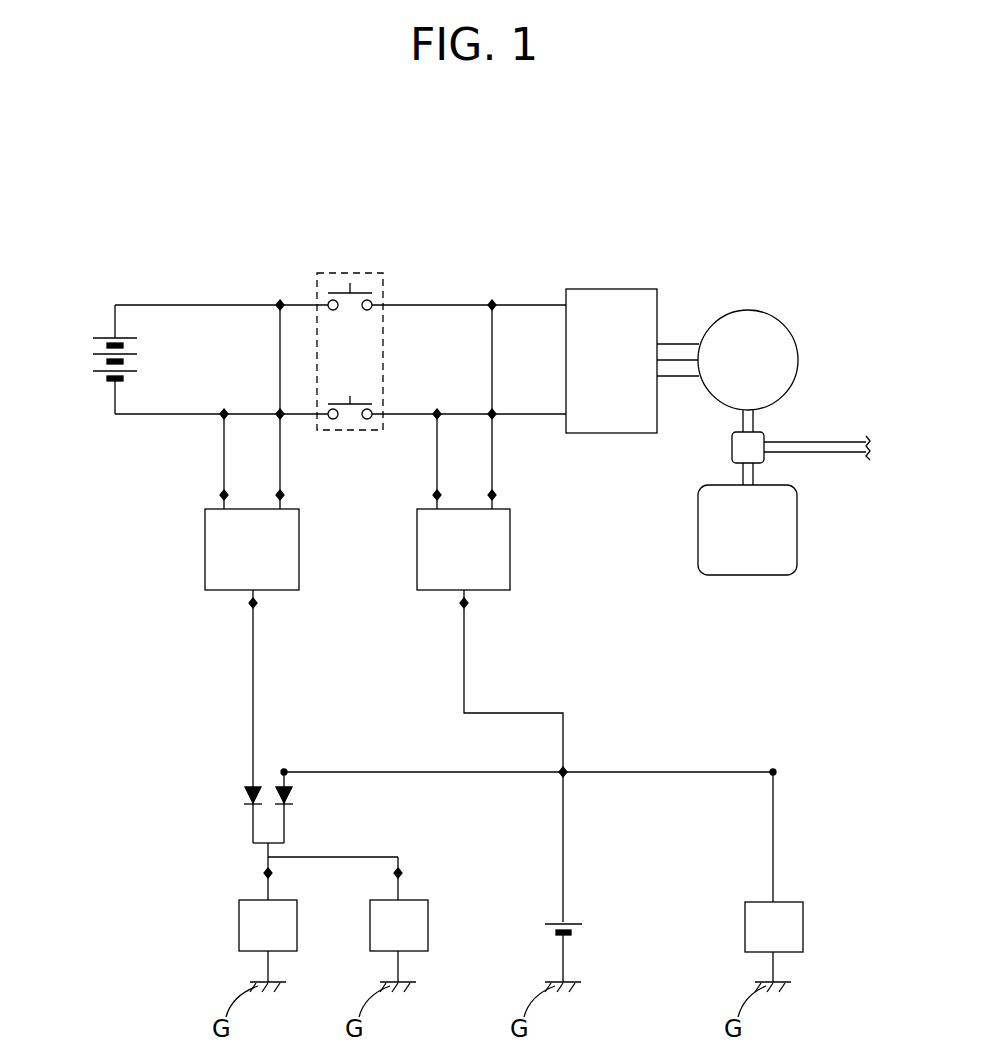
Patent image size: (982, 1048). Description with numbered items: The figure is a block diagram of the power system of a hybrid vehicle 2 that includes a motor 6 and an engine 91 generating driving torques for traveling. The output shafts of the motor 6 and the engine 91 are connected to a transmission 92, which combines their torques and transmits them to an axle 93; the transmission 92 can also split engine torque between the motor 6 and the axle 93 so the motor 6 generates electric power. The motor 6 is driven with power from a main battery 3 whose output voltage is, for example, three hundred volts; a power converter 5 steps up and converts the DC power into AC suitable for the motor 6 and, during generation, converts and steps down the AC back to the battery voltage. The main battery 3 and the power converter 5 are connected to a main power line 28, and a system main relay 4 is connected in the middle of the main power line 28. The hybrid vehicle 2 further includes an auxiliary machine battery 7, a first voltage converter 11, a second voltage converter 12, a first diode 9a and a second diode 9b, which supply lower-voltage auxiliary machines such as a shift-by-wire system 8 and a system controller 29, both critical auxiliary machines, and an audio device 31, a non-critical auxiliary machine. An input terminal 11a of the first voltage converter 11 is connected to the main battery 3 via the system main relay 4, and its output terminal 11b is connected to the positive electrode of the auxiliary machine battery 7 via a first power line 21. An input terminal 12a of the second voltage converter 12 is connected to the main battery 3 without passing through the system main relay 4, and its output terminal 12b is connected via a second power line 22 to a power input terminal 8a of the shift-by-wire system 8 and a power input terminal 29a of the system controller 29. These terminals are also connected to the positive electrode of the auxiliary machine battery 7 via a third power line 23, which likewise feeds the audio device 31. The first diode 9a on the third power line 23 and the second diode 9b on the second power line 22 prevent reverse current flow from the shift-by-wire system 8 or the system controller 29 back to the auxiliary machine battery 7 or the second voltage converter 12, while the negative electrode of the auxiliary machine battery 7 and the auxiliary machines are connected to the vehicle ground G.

The hybrid vehicle 2 is at (90, 212).
The main battery 3 is at (100, 338).
The system main relay 4 is at (342, 440).
The power converter 5 is at (612, 288).
The motor 6 is at (752, 311).
The auxiliary machine battery 7 is at (574, 922).
The shift-by-wire system 8 is at (239, 925).
The power input terminal 8a is at (265, 875).
The first diode 9a is at (291, 797).
The second diode 9b is at (249, 787).
The first voltage converter 11 is at (417, 548).
The input terminal 11a is at (490, 493).
The output terminal 11b is at (462, 606).
The second voltage converter 12 is at (205, 548).
The input terminal 12a is at (278, 493).
The output terminal 12b is at (251, 606).
The first power line 21 is at (466, 645).
The second power line 22 is at (255, 645).
The third power line 23 is at (362, 771).
The main power line 28 is at (208, 422).
The system controller 29 is at (430, 918).
The power input terminal 29a is at (401, 873).
The audio device 31 is at (803, 923).
The engine 91 is at (798, 530).
The transmission 92 is at (731, 448).
The axle 93 is at (826, 441).